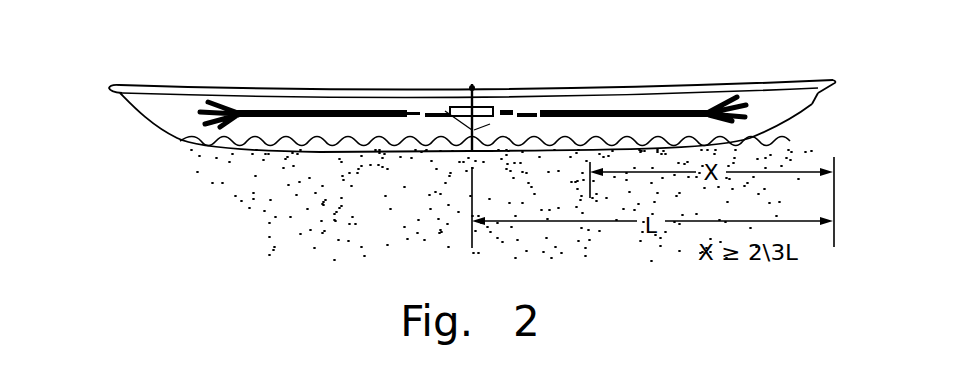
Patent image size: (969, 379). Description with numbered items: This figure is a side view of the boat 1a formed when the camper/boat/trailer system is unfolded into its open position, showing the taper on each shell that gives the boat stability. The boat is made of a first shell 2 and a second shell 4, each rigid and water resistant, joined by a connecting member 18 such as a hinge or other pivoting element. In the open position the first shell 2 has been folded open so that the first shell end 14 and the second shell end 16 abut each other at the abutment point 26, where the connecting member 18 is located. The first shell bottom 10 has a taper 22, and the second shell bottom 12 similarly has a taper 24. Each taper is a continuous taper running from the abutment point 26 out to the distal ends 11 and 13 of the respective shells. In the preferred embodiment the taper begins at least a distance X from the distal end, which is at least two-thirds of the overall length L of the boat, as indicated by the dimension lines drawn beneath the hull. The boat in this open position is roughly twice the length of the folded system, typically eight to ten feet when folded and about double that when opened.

The boat 1a is at (550, 77).
The first shell 2 is at (178, 110).
The second shell 4 is at (755, 110).
The first shell bottom 10 is at (318, 152).
The distal end of first shell 11 is at (109, 86).
The second shell bottom 12 is at (813, 107).
The distal end of second shell 13 is at (833, 82).
The first shell end 14 is at (445, 111).
The second shell end 16 is at (490, 124).
The connecting member 18 is at (470, 86).
The taper 22 is at (180, 137).
The taper 24 is at (787, 123).
The abutment point 26 is at (472, 147).